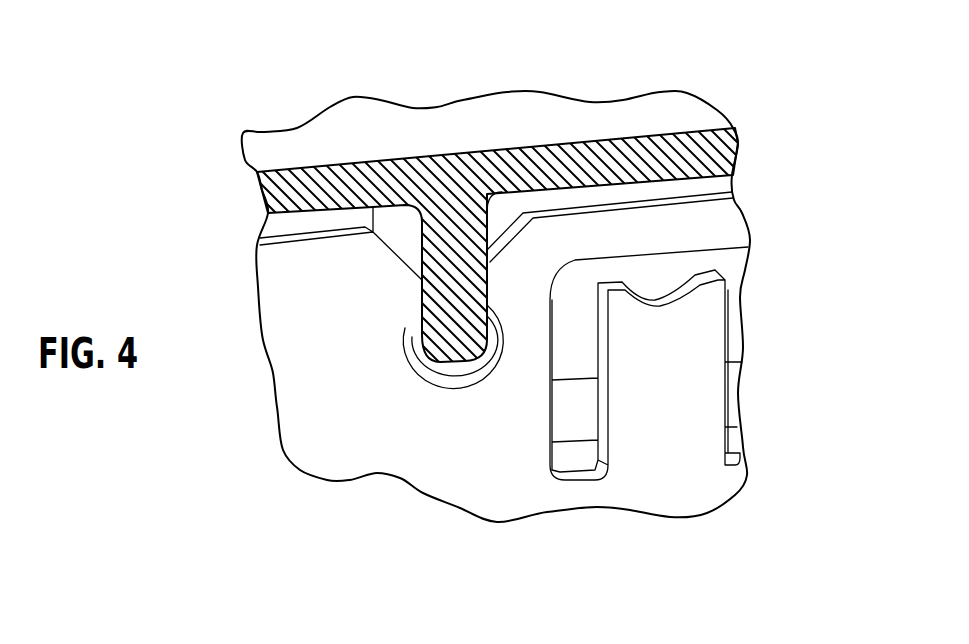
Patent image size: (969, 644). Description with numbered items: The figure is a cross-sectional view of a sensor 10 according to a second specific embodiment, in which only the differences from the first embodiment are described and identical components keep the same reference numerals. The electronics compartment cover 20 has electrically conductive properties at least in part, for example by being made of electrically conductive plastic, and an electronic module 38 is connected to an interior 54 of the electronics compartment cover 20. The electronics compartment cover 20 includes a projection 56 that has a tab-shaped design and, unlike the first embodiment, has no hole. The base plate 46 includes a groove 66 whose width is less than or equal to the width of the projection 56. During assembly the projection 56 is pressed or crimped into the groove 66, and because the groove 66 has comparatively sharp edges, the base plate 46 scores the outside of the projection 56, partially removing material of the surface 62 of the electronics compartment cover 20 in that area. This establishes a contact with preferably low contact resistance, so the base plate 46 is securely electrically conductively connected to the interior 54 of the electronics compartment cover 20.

The sensor 10 is at (728, 76).
The electronics compartment cover 20 is at (373, 130).
The electronic module 38 is at (692, 530).
The base plate 46 is at (357, 415).
The interior 54 is at (400, 226).
The projection 56 is at (452, 268).
The surface 62 is at (500, 278).
The groove 66 is at (475, 382).